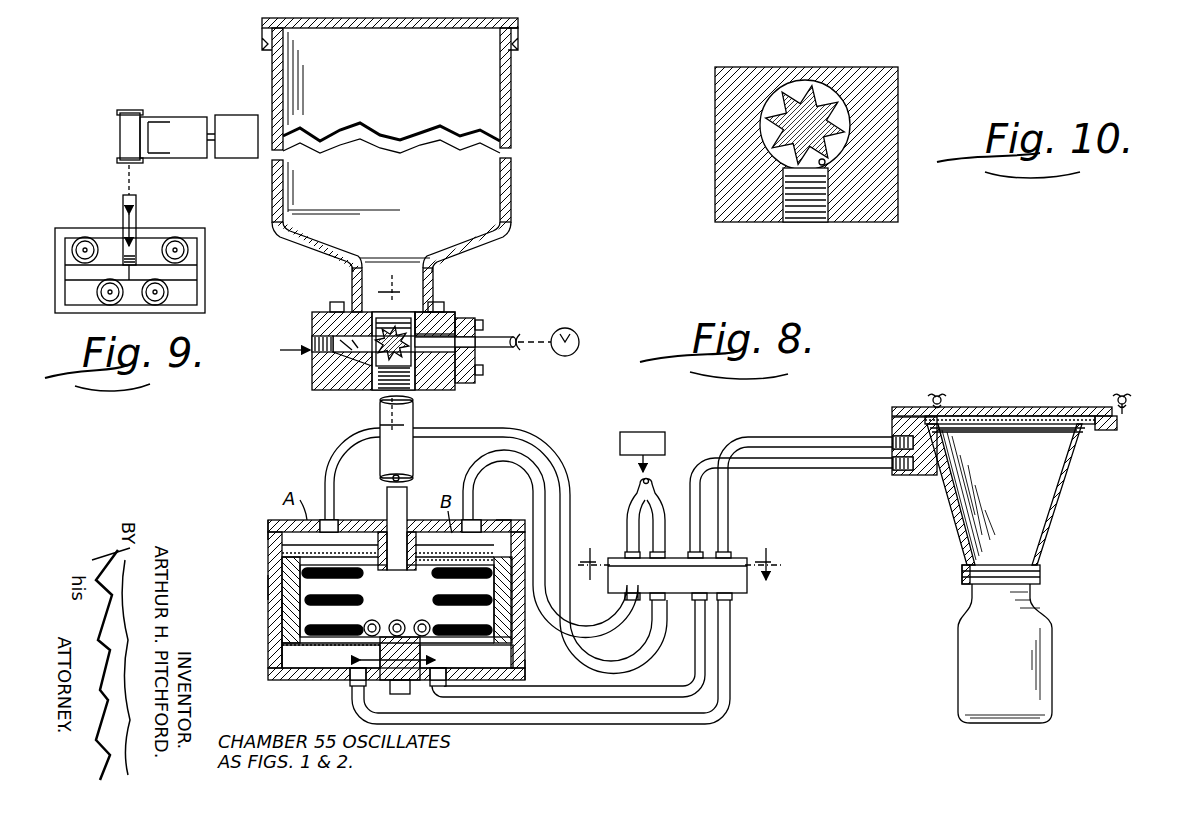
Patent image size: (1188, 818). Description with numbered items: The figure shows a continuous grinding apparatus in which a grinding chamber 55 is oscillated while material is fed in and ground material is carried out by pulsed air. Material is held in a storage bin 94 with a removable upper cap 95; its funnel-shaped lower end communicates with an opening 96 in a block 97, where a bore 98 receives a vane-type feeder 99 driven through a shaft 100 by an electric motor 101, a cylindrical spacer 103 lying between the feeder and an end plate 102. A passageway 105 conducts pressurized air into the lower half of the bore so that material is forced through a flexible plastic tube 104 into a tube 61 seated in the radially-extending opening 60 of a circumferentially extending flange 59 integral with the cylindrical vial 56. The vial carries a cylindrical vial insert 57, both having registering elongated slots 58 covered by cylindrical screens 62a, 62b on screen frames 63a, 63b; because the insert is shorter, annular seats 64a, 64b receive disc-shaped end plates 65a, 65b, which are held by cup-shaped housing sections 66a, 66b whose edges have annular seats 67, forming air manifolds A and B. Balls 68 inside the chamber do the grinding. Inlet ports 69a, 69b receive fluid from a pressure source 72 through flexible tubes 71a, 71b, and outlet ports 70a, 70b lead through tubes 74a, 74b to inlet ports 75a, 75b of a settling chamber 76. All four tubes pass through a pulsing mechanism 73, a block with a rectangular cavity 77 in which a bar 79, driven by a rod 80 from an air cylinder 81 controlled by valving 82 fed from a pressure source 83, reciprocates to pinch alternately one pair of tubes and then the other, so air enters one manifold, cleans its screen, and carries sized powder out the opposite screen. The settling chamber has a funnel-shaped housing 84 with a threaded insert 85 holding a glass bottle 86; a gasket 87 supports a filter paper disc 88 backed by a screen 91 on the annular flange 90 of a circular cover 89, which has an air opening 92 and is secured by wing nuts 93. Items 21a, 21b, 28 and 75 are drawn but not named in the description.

In FIG. 8, the storage bin 94 is at (512, 105).
In FIG. 8, the removable upper cap 95 is at (434, 29).
In FIG. 8, the block 97 is at (322, 312).
In FIG. 10, the block 97 is at (718, 160).
In FIG. 8, the opening 96 is at (394, 316).
In FIG. 10, the opening 96 is at (812, 80).
In FIG. 8, the bore 98 is at (452, 312).
In FIG. 8, the vane-type feeder 99 is at (405, 372).
In FIG. 10, the vane-type feeder 99 is at (822, 118).
In FIG. 8, the shaft 100 is at (488, 328).
In FIG. 8, the electric motor 101 is at (564, 328).
In FIG. 8, the end plate 102 is at (478, 352).
In FIG. 8, the cylindrical spacer 103 is at (470, 384).
In FIG. 8, the passageway 105 is at (350, 390).
In FIG. 10, the passageway 105 is at (826, 164).
In FIG. 8, the flexible plastic tube 104 is at (400, 452).
In FIG. 8, the tube 21a is at (366, 434).
In FIG. 8, the tube 21b is at (515, 456).
In FIG. 8, the inlet port 69a is at (324, 520).
In FIG. 8, the inlet port 69b is at (475, 515).
In FIG. 8, the flexible plastic tube 71b is at (569, 478).
In FIG. 9, the flexible plastic tube 71b is at (86, 237).
In FIG. 8, the cylindrical vial 56 is at (268, 556).
In FIG. 8, the screen frame 63a is at (268, 530).
In FIG. 8, the screen frame 63b is at (526, 670).
In FIG. 8, the cup-shaped housing section 66a is at (268, 582).
In FIG. 8, the cup-shaped housing section 66b is at (502, 522).
In FIG. 8, the disc-shaped end plate 65a is at (282, 605).
In FIG. 8, the disc-shaped end plate 65b is at (500, 612).
In FIG. 8, the annular seat 64a is at (282, 645).
In FIG. 8, the annular seat 64b is at (512, 636).
In FIG. 8, the grinding chamber 55 is at (408, 608).
In FIG. 8, the cylindrical vial insert 57 is at (390, 568).
In FIG. 8, the elongated slots 58 is at (333, 568).
In FIG. 8, the tube 61 is at (387, 498).
In FIG. 8, the radially-extending opening 60 is at (416, 542).
In FIG. 8, the annular seats 67 is at (380, 536).
In FIG. 8, the cylindrical screen 62a is at (346, 648).
In FIG. 8, the cylindrical screen 62b is at (458, 547).
In FIG. 8, the balls 68 is at (420, 622).
In FIG. 8, the circumferentially extending flange 59 is at (402, 680).
In FIG. 8, the outlet port 70a is at (350, 684).
In FIG. 8, the outlet port 70b is at (438, 688).
In FIG. 8, the flexible plastic tube 74a is at (586, 728).
In FIG. 9, the flexible plastic tube 74a is at (176, 237).
In FIG. 8, the flexible plastic tube 74b is at (640, 700).
In FIG. 9, the flexible plastic tube 74b is at (157, 305).
In FIG. 8, the pulsing mechanism 73 is at (690, 588).
In FIG. 8, the nozzle 28 is at (748, 552).
In FIG. 8, the source of fluid under pressure 72 is at (652, 452).
In FIG. 8, the inlet port 75a is at (892, 438).
In FIG. 8, the inlet port 75b is at (892, 472).
In FIG. 8, the annular flange 90 is at (920, 407).
In FIG. 8, the circular cover 89 is at (1030, 408).
In FIG. 8, the opening 92 is at (1000, 408).
In FIG. 8, the screen 91 is at (965, 420).
In FIG. 8, the removable disc of filter paper 88 is at (990, 428).
In FIG. 8, the wing nuts 93 is at (938, 396).
In FIG. 8, the gasket 87 is at (1100, 426).
In FIG. 8, the funnel-shaped housing 84 is at (1068, 470).
In FIG. 8, the filtering or settling chamber 76 is at (1019, 481).
In FIG. 8, the threaded insert 85 is at (1042, 572).
In FIG. 8, the glass bottle 86 is at (1023, 653).
In FIG. 9, the manifold 75 is at (206, 303).
In FIG. 9, the rectangular cavity 77 is at (197, 278).
In FIG. 9, the flexible plastic tube 71a is at (109, 305).
In FIG. 9, the rod 80 is at (136, 206).
In FIG. 9, the bar 79 is at (144, 274).
In FIG. 9, the air cylinder 81 is at (120, 135).
In FIG. 9, the valving 82 is at (200, 139).
In FIG. 9, the source of fluid under pressure 83 is at (250, 139).